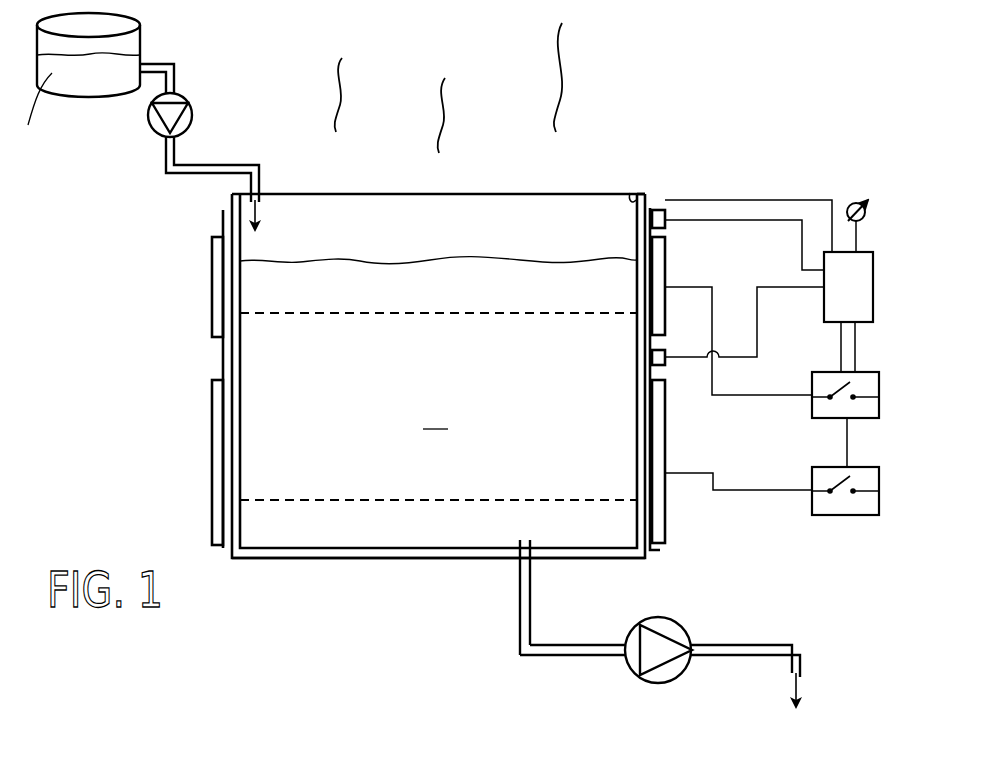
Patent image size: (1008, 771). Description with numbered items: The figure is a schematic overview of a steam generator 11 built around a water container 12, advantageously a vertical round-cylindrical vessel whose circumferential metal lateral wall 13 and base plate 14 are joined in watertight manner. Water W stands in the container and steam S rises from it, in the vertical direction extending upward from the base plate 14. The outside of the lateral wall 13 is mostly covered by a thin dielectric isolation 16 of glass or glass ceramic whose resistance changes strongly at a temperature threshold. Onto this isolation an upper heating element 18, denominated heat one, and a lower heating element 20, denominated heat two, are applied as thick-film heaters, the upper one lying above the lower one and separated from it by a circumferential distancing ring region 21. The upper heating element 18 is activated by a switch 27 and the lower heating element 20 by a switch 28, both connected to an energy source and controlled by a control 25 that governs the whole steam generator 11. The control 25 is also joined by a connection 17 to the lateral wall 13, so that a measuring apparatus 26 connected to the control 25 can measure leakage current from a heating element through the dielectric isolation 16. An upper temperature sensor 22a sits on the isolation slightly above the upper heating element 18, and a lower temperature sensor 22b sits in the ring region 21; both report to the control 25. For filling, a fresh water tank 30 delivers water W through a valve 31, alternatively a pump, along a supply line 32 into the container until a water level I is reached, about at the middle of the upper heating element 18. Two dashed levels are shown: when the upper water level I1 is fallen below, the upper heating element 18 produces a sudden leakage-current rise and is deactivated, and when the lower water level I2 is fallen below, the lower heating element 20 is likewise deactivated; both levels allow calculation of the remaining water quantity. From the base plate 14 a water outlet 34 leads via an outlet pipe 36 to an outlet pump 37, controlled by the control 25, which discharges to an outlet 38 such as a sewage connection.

The steam generator 11 is at (783, 72).
The water container 12 is at (598, 163).
The lateral wall 13 is at (632, 195).
The base plate 14 is at (352, 558).
The dielectric isolation 16 is at (223, 222).
The connection 17 is at (648, 196).
The upper heating element 18 is at (212, 258).
The lower heating element 20 is at (212, 417).
The ring region 21 is at (212, 358).
The upper temperature sensor 22a is at (686, 196).
The lower temperature sensor 22b is at (667, 367).
The control 25 is at (874, 263).
The measuring apparatus 26 is at (655, 550).
The switch 27 is at (812, 380).
The switch 28 is at (812, 503).
The fresh water tank 30 is at (140, 24).
The valve 31 is at (188, 90).
The water supply pipe 32 is at (212, 165).
The water outlet 34 is at (517, 565).
The outlet pipe 36 is at (553, 655).
The outlet pump 37 is at (652, 685).
The outlet 38 is at (800, 662).
The steam S is at (565, 63).
The water W is at (328, 253).
The water level I is at (470, 260).
The upper water level I1 is at (367, 313).
The lower water level I2 is at (318, 500).